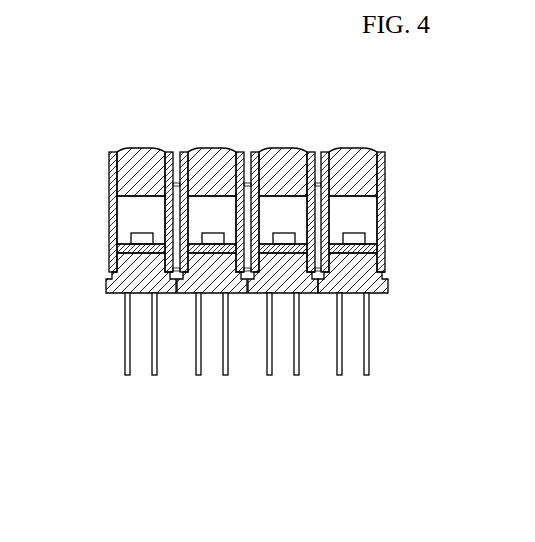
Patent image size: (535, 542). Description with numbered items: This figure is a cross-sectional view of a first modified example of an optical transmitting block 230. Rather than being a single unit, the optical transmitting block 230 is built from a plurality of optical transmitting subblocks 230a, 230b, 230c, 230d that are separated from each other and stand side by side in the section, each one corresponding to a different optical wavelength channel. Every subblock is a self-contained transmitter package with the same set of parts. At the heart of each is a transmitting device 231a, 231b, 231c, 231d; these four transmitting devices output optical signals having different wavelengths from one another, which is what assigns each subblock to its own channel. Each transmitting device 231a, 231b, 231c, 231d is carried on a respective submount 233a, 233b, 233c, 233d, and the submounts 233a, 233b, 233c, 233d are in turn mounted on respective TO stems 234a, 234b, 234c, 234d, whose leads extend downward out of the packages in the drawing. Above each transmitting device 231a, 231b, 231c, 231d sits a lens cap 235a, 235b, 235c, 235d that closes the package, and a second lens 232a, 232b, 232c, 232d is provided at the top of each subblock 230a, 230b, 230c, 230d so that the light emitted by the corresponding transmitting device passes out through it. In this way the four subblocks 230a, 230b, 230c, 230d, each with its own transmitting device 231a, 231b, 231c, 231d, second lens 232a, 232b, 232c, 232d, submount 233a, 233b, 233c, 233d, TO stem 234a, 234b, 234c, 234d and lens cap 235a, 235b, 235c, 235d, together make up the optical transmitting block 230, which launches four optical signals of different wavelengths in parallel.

The optical transmitting block 230 is at (380, 457).
The optical transmitting subblock 230a is at (142, 388).
The optical transmitting subblock 230b is at (216, 388).
The optical transmitting subblock 230c is at (286, 388).
The optical transmitting subblock 230d is at (353, 388).
The transmitting device 231a is at (132, 237).
The transmitting device 231b is at (210, 237).
The transmitting device 231c is at (295, 233).
The transmitting device 231d is at (366, 241).
The second lens 232a is at (127, 173).
The second lens 232b is at (223, 155).
The second lens 232c is at (297, 160).
The second lens 232d is at (365, 158).
The submount 233a is at (118, 266).
The submount 233b is at (182, 277).
The submount 233c is at (300, 268).
The submount 233d is at (387, 263).
The TO stem 234a is at (131, 285).
The TO stem 234b is at (198, 300).
The TO stem 234c is at (302, 308).
The TO stem 234d is at (372, 300).
The lens cap 235a is at (128, 207).
The lens cap 235b is at (197, 217).
The lens cap 235c is at (300, 190).
The lens cap 235d is at (367, 205).